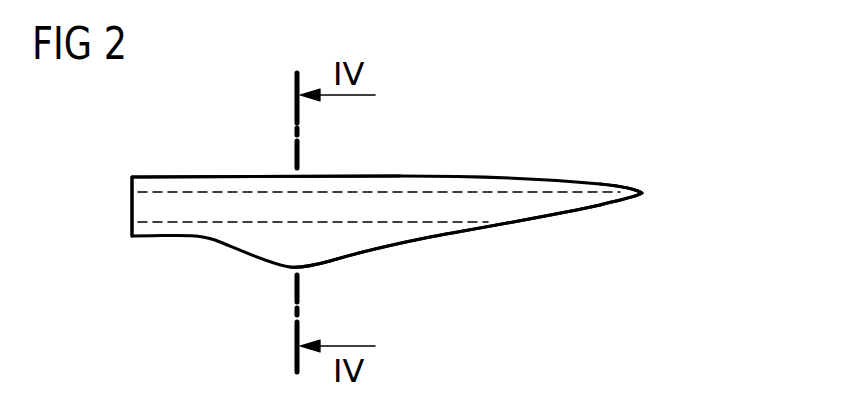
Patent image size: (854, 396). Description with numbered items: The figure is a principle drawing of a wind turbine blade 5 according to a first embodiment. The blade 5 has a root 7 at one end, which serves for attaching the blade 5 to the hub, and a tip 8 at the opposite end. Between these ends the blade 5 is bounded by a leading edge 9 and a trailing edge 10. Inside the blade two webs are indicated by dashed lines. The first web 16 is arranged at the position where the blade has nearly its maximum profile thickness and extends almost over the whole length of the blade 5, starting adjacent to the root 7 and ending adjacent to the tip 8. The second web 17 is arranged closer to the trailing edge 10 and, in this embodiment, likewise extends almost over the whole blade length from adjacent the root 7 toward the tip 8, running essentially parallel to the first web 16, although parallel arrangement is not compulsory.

The turbine blade 5 is at (637, 148).
The root 7 is at (132, 212).
The tip 8 is at (643, 193).
The leading edge 9 is at (189, 177).
The trailing edge 10 is at (533, 222).
The first web 16 is at (450, 190).
The second web 17 is at (423, 222).